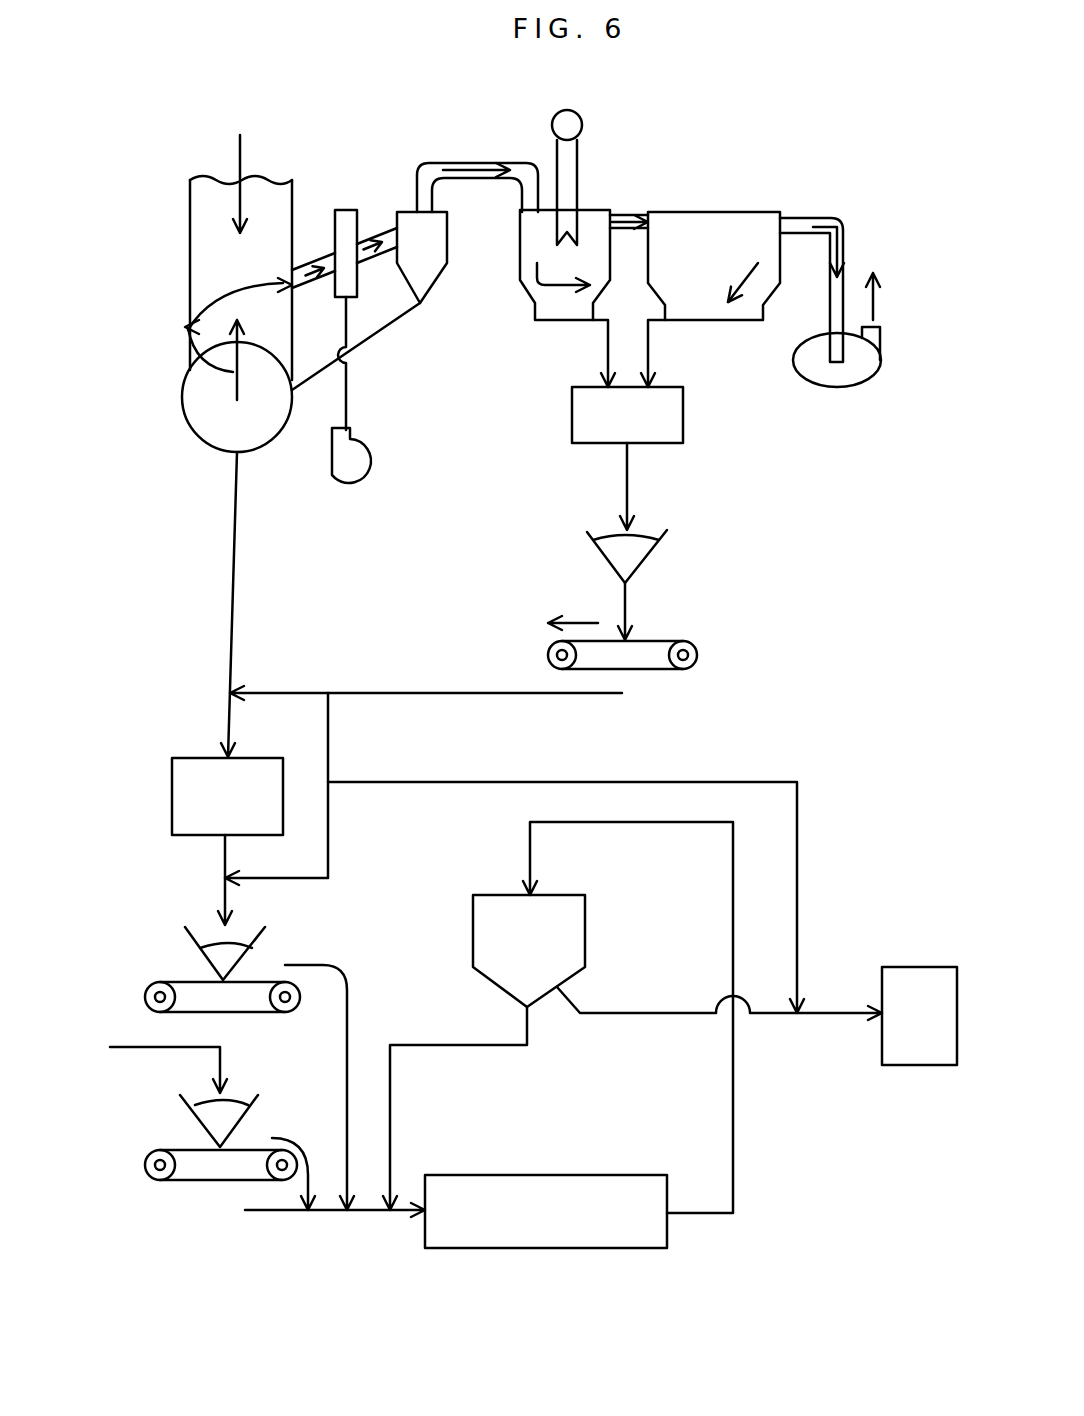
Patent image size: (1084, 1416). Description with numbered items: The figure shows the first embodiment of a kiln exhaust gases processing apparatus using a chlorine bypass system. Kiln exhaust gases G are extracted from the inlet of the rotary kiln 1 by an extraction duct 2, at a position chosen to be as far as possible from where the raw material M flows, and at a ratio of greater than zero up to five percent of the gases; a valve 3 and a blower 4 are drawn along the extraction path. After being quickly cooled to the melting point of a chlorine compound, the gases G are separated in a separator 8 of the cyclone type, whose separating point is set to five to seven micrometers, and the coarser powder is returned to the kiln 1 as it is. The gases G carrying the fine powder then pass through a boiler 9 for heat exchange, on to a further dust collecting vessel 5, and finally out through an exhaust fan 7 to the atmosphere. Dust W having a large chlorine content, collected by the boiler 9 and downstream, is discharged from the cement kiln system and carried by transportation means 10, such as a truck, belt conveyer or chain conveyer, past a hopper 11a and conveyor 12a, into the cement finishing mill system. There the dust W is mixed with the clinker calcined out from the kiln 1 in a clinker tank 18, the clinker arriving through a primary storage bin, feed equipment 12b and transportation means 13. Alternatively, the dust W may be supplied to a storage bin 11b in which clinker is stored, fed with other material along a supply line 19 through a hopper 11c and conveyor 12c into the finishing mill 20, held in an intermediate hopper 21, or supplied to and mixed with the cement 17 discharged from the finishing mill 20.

The material M is at (240, 212).
The kiln exhaust gases G is at (184, 327).
The dust W is at (563, 290).
The rotary kiln 1 is at (185, 428).
The extraction duct 2 is at (320, 255).
The valve 3 is at (345, 208).
The blower 4 is at (345, 483).
The scrubber 5 is at (740, 212).
The exhaust fan 7 is at (870, 382).
The separator 8 is at (410, 212).
The boiler 9 is at (592, 210).
The transportation means 10 is at (630, 500).
The primary storage bin 11a is at (657, 538).
The conveyor 12a is at (697, 657).
The transportation means 13 is at (440, 692).
The cement 17 is at (922, 967).
The clinker tank 18 is at (172, 795).
The supply line 19 is at (148, 1045).
The storage bin 11b is at (200, 947).
The feed equipment 12b is at (160, 982).
The hopper 11c is at (195, 1115).
The conveyor 12c is at (175, 1180).
The finishing mill 20 is at (555, 1248).
The hopper 21 is at (585, 945).